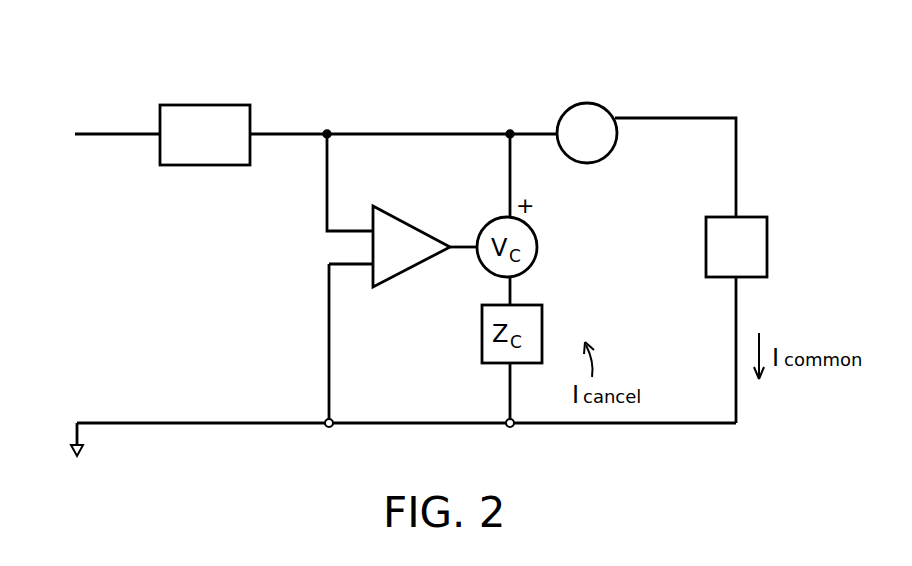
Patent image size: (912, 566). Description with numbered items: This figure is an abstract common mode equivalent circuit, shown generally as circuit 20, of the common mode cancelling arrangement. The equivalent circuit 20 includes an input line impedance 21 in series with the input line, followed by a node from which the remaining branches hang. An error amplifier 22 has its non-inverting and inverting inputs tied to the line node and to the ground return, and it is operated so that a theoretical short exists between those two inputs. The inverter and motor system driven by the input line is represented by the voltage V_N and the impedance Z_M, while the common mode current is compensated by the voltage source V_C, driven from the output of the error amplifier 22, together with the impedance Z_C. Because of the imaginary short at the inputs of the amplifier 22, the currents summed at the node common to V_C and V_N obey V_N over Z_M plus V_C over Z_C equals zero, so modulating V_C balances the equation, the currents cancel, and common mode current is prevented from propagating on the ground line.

The common mode equivalent circuit 20 is at (663, 88).
The input line impedance 21 is at (218, 105).
The error amplifier 22 is at (437, 234).